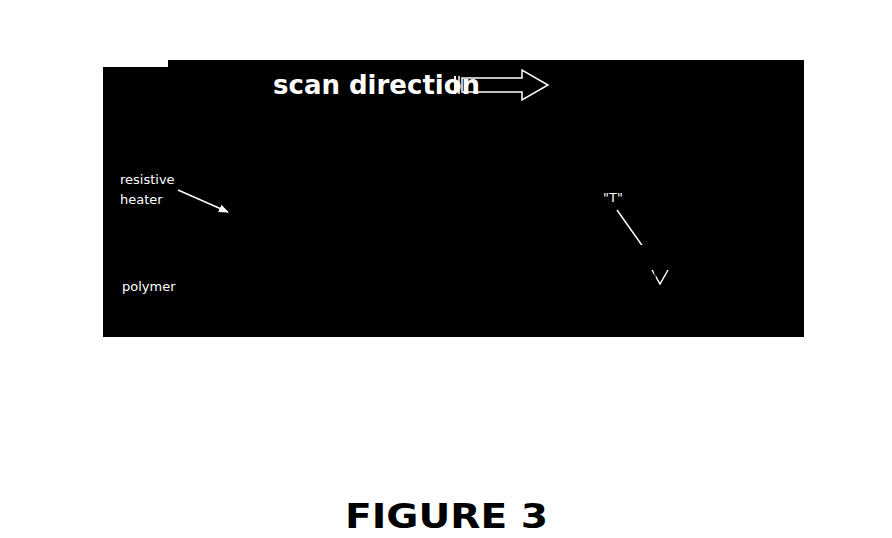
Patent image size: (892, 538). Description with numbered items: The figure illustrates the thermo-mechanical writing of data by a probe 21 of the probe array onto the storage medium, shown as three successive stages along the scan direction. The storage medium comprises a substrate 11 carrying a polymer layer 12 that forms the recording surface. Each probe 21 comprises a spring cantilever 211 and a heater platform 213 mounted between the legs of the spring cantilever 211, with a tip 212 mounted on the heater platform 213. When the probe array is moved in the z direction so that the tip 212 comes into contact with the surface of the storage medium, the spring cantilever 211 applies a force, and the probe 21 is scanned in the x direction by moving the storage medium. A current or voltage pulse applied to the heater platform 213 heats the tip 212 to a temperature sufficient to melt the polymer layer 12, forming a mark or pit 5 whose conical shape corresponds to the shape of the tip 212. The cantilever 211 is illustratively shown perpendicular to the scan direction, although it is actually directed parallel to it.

The probe 21 is at (148, 67).
The polymer layer 12 is at (103, 271).
The substrate 11 is at (145, 333).
The spring cantilever 211 is at (750, 184).
The heater platform 213 is at (700, 220).
The tip 212 is at (723, 290).
The mark or pit 5 is at (660, 337).